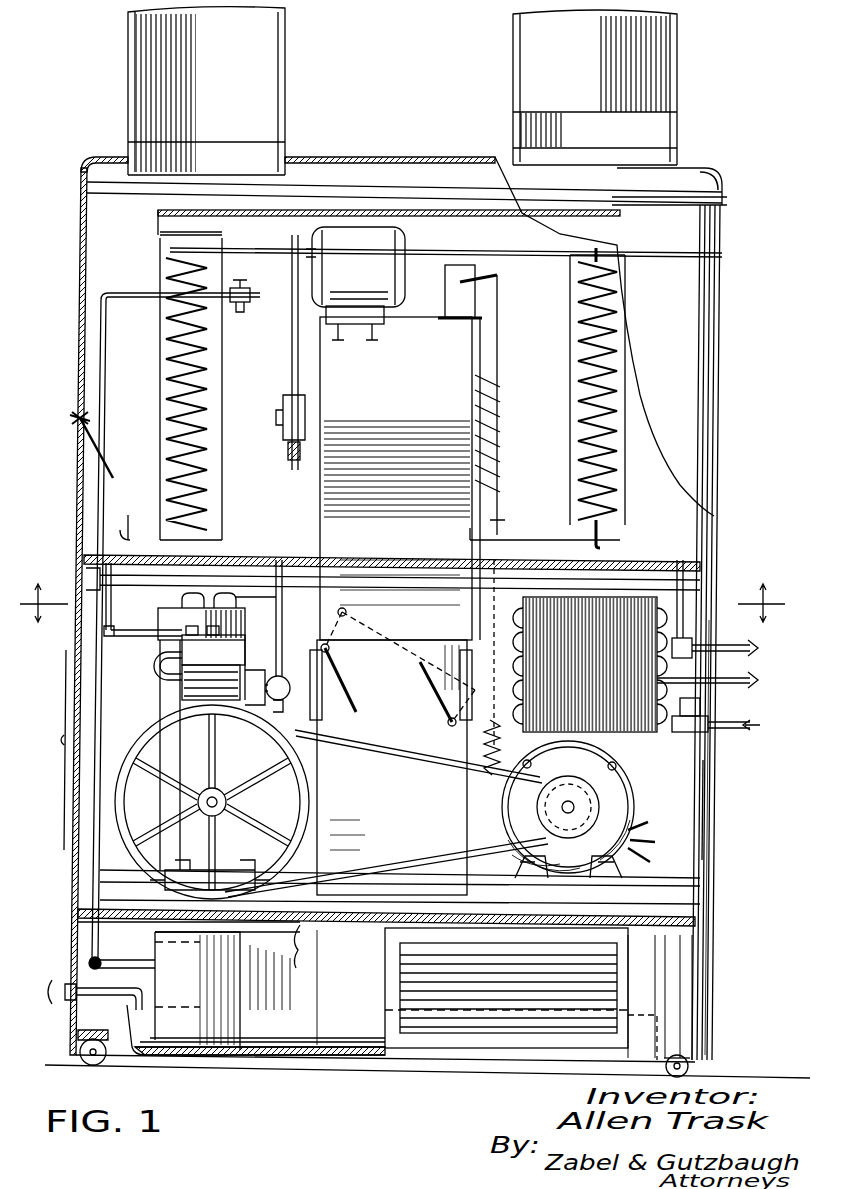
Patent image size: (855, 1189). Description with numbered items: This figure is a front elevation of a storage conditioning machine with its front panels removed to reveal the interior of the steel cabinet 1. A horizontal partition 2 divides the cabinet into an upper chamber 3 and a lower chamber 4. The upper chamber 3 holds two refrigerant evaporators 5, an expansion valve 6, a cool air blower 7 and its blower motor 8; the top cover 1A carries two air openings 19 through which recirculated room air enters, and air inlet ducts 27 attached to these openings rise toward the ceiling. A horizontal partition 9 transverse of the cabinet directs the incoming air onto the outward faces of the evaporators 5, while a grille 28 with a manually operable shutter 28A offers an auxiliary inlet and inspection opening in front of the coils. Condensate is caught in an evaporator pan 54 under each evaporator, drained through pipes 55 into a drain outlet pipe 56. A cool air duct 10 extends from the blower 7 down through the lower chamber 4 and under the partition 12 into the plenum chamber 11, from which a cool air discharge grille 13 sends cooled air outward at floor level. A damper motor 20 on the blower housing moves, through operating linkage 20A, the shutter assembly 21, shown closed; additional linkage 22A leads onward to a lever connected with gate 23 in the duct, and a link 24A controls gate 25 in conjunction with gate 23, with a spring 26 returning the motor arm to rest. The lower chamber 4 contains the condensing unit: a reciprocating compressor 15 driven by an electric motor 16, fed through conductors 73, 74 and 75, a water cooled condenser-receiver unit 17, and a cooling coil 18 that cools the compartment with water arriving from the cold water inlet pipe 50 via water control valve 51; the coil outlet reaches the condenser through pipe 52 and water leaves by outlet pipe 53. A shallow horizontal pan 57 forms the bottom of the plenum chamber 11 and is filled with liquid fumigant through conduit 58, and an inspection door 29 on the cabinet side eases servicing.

The steel cabinet 1 is at (690, 266).
The top cover 1A is at (705, 174).
The horizontal partition 2 is at (718, 612).
The upper chamber 3 is at (96, 252).
The lower chamber 4 is at (712, 776).
The refrigerant evaporator 5 is at (222, 346).
The expansion valve 6 is at (250, 306).
The cool air blower 7 is at (410, 370).
The blower motor 8 is at (362, 282).
The horizontal partition 9 is at (330, 214).
The cool air duct 10 is at (402, 840).
The plenum chamber 11 is at (296, 992).
The partition 12 is at (307, 951).
The cool air discharge grille 13 is at (475, 1005).
The reciprocating compressor 15 is at (188, 770).
The electric motor 16 is at (620, 790).
The water cooled condenser-receiver unit 17 is at (190, 970).
The cooling coil 18 is at (618, 735).
The air opening 19 is at (240, 152).
The damper motor 20 is at (448, 284).
The operating linkage 20A is at (500, 352).
The shutter assembly 21 is at (495, 420).
The additional linkage 22A is at (500, 500).
The gate 23 is at (440, 690).
The link 24A is at (400, 665).
The gate 25 is at (340, 682).
The spring 26 is at (504, 747).
The air inlet duct 27 is at (285, 64).
The grille 28 is at (80, 425).
The manually operable shutter 28A is at (110, 468).
The inspection door 29 is at (714, 800).
The cold water inlet pipe 50 is at (745, 736).
The water control valve 51 is at (688, 732).
The pipe 52 is at (498, 603).
The water outlet pipe 53 is at (172, 603).
The evaporator pan 54 is at (118, 536).
The drain pipe 55 is at (140, 652).
The drain outlet pipe 56 is at (700, 645).
The shallow horizontal pan 57 is at (330, 1020).
The conduit 58 is at (64, 990).
The conductor 73 is at (652, 860).
The conductor 74 is at (657, 833).
The conductor 75 is at (650, 824).